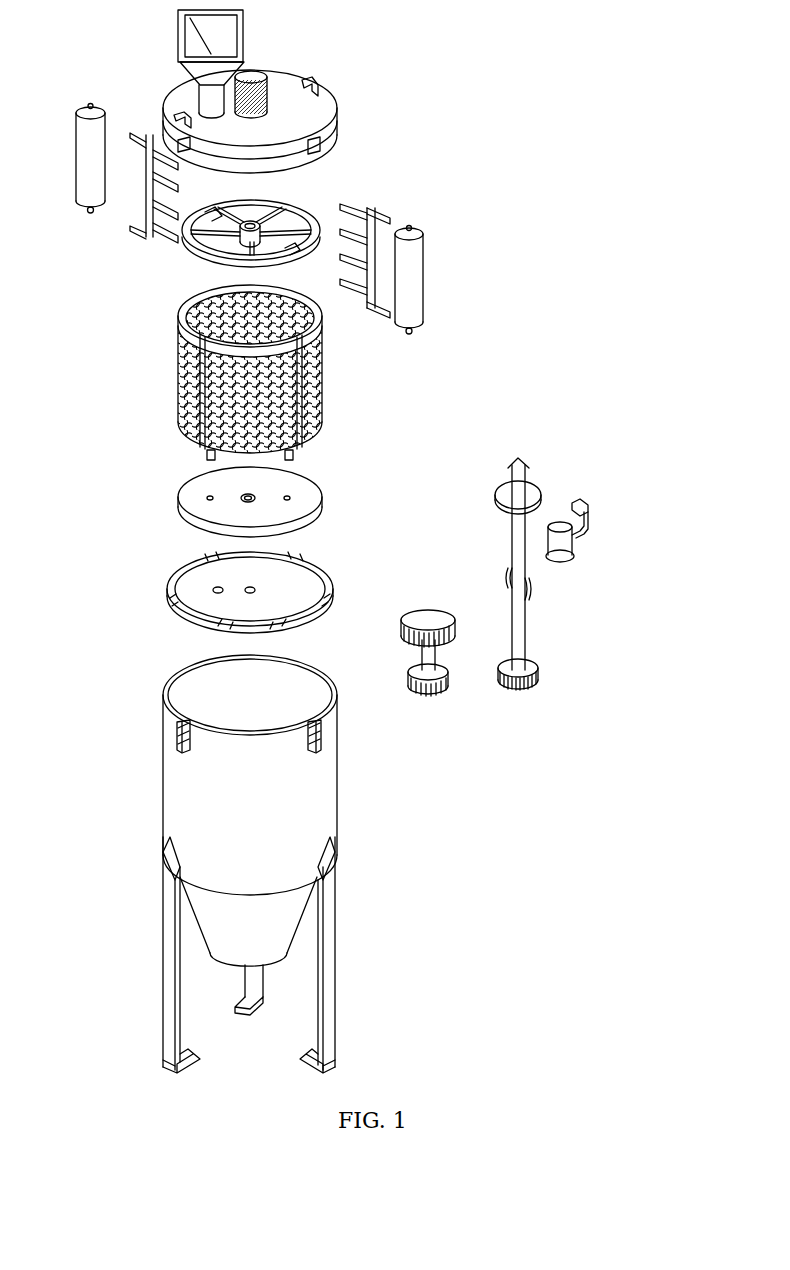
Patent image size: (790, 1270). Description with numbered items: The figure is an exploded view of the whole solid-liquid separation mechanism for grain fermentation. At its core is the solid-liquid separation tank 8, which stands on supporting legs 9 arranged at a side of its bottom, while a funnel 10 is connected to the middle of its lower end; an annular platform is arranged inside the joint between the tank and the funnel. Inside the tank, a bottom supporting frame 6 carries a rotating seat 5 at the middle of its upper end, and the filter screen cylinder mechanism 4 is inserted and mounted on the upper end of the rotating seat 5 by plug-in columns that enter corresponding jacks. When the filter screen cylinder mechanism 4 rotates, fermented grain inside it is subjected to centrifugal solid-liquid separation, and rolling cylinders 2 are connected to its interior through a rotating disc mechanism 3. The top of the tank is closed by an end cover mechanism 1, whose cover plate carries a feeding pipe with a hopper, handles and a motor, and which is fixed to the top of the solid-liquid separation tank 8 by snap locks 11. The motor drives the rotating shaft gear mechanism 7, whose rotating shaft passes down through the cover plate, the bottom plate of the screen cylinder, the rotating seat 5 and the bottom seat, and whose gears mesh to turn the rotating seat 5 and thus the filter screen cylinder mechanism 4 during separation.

The end cover mechanism 1 is at (342, 110).
The rolling cylinders 2 is at (417, 270).
The rotating disc mechanism 3 is at (188, 259).
The filter screen cylinder mechanism 4 is at (177, 386).
The rotating seat 5 is at (308, 490).
The bottom supporting frame 6 is at (172, 620).
The rotating shaft gear mechanism 7 is at (565, 628).
The solid-liquid separation tank 8 is at (328, 795).
The supporting legs 9 is at (328, 953).
The funnel 10 is at (223, 925).
The snap locks 11 is at (183, 747).